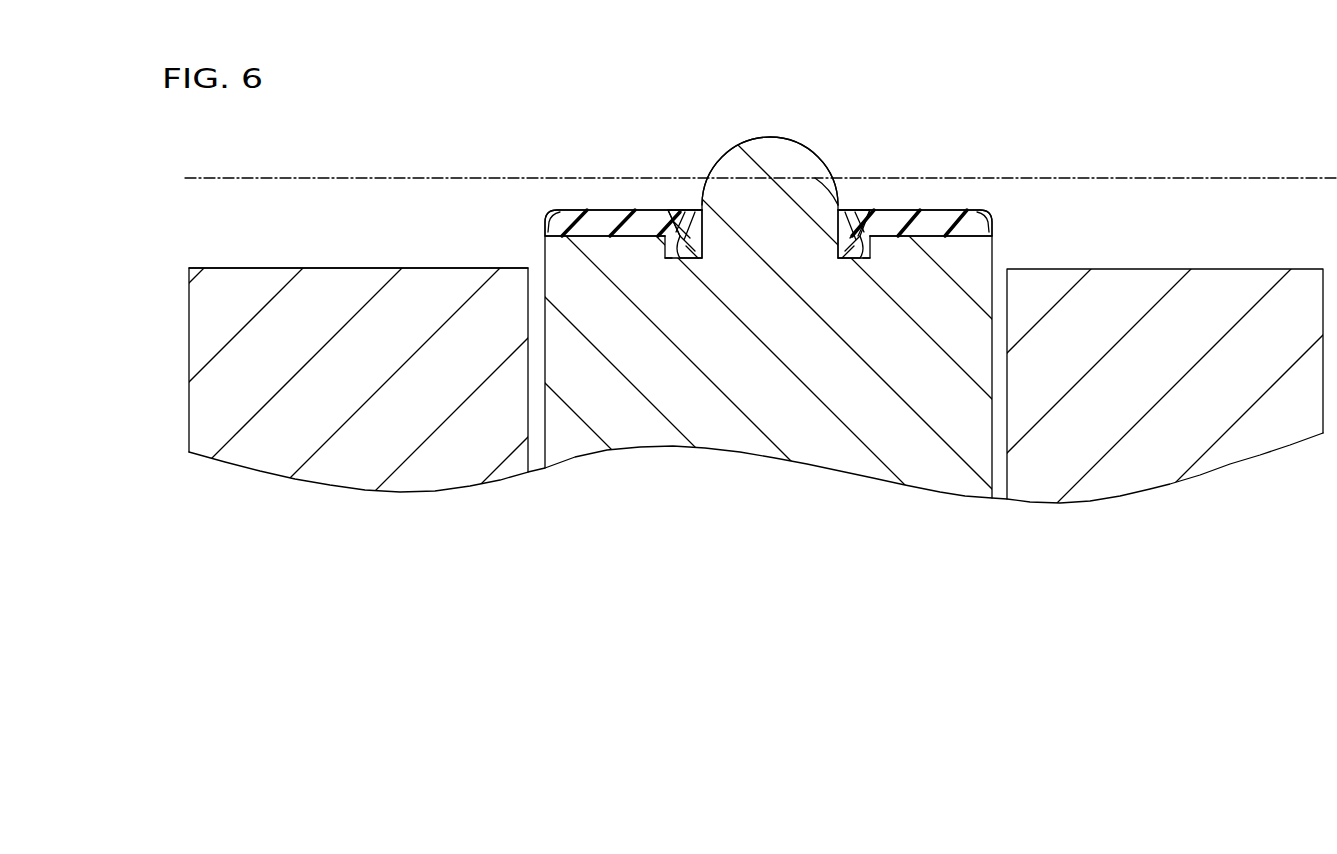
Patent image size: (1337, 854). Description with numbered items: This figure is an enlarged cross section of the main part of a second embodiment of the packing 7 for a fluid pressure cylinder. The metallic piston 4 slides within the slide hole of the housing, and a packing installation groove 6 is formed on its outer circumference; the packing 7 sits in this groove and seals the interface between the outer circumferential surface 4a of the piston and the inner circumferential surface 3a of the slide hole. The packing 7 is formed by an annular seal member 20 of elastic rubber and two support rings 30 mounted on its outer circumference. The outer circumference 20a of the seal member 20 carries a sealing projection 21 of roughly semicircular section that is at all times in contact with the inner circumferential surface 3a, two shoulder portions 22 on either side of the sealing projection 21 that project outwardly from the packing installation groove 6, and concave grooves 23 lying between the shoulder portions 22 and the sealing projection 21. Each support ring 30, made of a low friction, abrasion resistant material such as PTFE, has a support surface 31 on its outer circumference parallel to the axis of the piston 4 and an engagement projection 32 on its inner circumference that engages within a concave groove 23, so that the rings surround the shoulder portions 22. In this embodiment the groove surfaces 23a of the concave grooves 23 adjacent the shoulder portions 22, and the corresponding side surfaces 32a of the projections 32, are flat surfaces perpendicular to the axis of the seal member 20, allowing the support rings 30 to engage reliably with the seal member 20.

The inner circumferential surface 3a is at (1180, 181).
The piston 4 is at (268, 282).
The outer circumferential surface 4a is at (383, 267).
The packing installation groove 6 is at (997, 468).
The packing 7 is at (722, 104).
The seal member 20 is at (918, 468).
The outer circumference 20a is at (822, 127).
The sealing projection 21 is at (768, 146).
The shoulder portion 22 is at (595, 232).
The concave groove 23 is at (700, 250).
The groove surface 23a is at (678, 234).
The support ring 30 is at (606, 196).
The support surface 31 is at (618, 208).
The engagement projection 32 is at (683, 245).
The side surface 32a is at (668, 247).